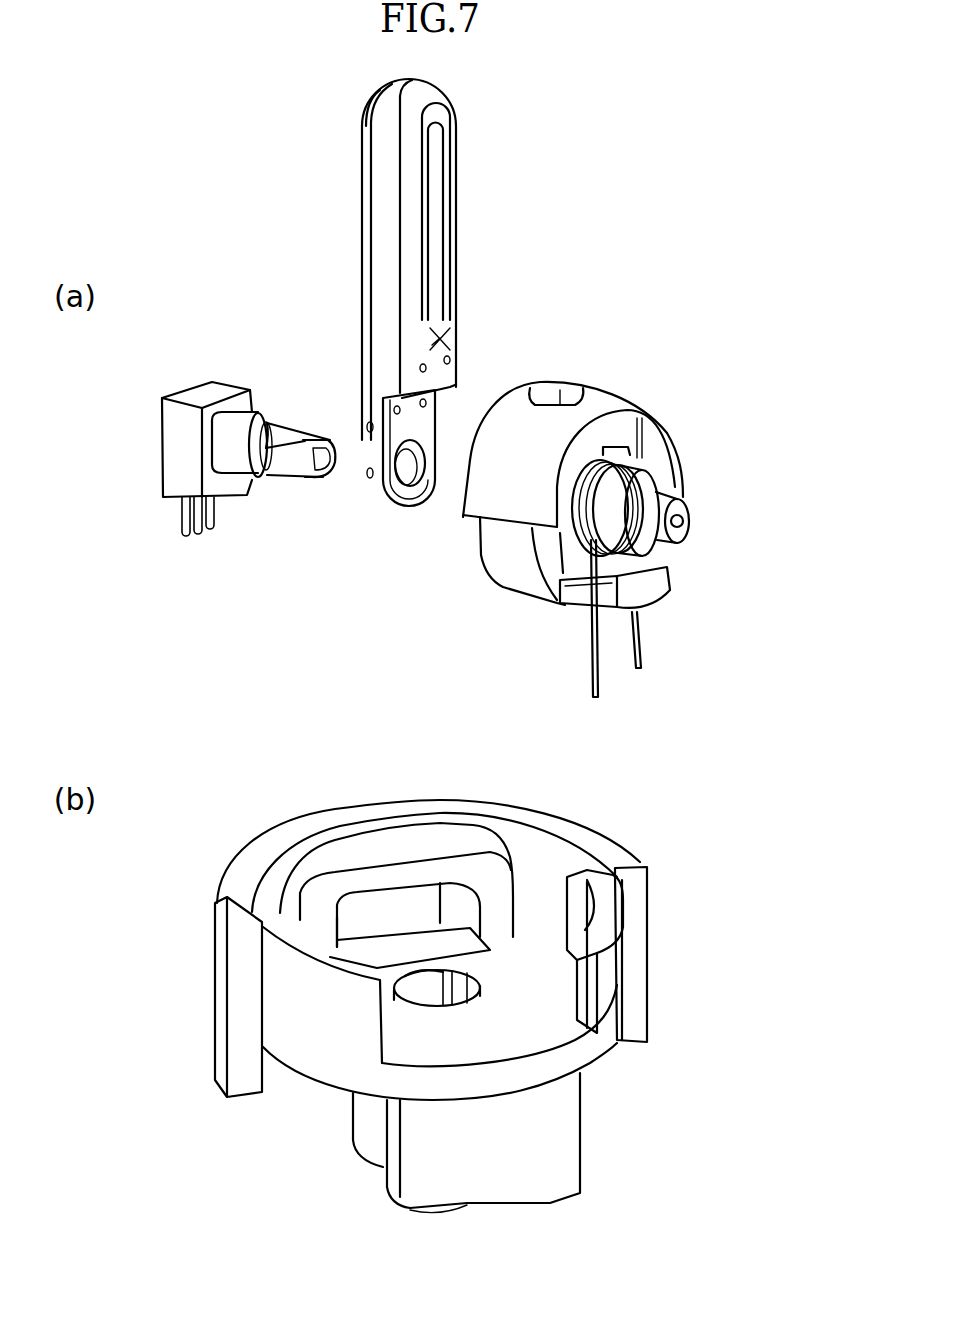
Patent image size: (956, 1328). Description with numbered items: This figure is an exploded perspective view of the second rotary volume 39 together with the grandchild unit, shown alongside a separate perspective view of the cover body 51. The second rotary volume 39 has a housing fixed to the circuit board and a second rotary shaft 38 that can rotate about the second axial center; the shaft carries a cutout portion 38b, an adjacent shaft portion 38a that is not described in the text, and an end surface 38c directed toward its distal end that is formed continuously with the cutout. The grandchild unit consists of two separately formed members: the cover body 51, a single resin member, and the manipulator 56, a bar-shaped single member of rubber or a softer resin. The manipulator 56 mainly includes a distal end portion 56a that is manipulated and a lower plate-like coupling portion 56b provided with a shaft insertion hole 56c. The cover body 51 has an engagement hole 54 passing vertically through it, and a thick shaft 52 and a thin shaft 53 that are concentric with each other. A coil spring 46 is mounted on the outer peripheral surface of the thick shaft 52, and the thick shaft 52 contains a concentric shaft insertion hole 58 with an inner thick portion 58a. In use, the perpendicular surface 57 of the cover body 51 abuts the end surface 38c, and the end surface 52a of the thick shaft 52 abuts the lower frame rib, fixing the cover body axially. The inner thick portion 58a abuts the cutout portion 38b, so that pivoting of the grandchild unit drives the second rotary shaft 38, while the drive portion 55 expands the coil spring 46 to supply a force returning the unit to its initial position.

The second rotary shaft 38 is at (280, 474).
The flange of rotary shaft 38a is at (257, 477).
The cutout portion 38b is at (317, 423).
The end surface 38c is at (300, 427).
The second rotary volume 39 is at (172, 485).
The coil spring 46 is at (642, 660).
The cover body 51 is at (656, 393).
The thick shaft 52 is at (660, 462).
The end surface of the thick shaft 52a is at (650, 550).
The thin shaft 53 is at (690, 494).
The engagement hole 54 is at (552, 394).
The drive portion 55 is at (665, 595).
The manipulator 56 is at (460, 138).
The distal end portion 56a is at (383, 92).
The coupling portion 56b is at (385, 497).
The shaft insertion hole 56c is at (409, 482).
The perpendicular surface 57 is at (398, 953).
The shaft insertion hole 58 is at (437, 968).
The inner thick portion 58a is at (467, 1005).